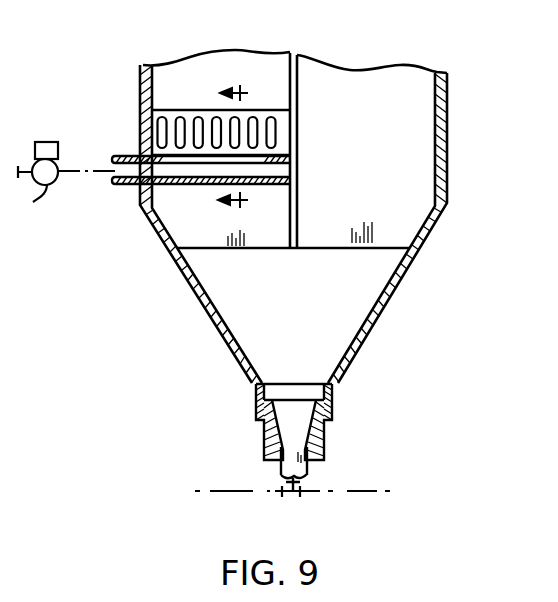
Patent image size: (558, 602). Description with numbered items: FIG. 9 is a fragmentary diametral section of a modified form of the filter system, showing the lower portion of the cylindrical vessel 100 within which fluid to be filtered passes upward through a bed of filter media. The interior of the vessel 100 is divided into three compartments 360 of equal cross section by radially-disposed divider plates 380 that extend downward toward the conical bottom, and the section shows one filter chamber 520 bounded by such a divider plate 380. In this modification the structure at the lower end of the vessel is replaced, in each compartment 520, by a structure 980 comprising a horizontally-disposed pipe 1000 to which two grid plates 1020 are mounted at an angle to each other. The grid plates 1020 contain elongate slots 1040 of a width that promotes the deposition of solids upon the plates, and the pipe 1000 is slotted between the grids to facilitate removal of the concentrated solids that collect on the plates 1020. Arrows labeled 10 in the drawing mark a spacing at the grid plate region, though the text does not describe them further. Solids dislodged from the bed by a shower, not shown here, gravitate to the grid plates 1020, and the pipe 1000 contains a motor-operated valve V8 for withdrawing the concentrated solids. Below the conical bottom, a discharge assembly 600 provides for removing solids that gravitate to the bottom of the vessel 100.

The cylindrical vessel 100 is at (460, 146).
The filter chamber 520 is at (356, 142).
The structure 980 is at (174, 88).
The elongate slots 1040 is at (172, 107).
The grid plates 1020 is at (204, 105).
The pipe 1000 is at (203, 186).
The dimension 10 is at (248, 148).
The motor-operated valve V8 is at (66, 184).
The compartments 360 is at (23, 293).
The divider plates 380 is at (300, 250).
The discharge assembly 600 is at (243, 452).